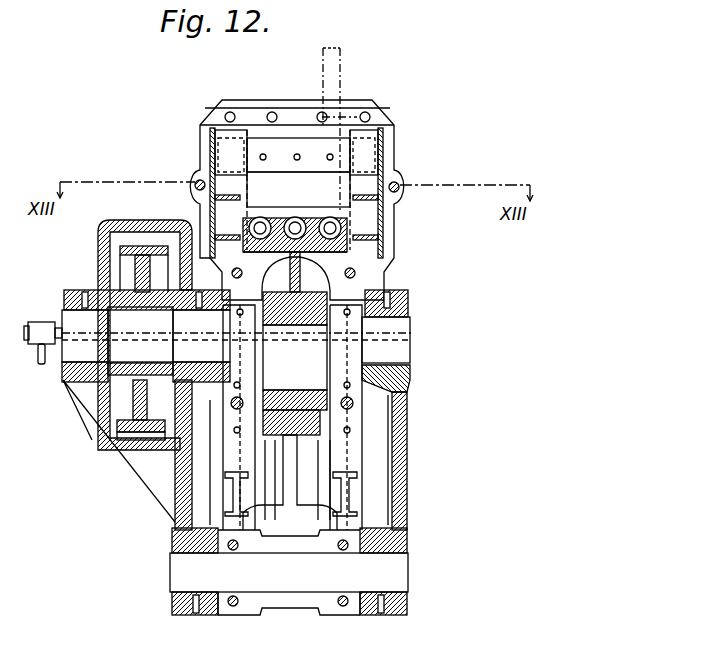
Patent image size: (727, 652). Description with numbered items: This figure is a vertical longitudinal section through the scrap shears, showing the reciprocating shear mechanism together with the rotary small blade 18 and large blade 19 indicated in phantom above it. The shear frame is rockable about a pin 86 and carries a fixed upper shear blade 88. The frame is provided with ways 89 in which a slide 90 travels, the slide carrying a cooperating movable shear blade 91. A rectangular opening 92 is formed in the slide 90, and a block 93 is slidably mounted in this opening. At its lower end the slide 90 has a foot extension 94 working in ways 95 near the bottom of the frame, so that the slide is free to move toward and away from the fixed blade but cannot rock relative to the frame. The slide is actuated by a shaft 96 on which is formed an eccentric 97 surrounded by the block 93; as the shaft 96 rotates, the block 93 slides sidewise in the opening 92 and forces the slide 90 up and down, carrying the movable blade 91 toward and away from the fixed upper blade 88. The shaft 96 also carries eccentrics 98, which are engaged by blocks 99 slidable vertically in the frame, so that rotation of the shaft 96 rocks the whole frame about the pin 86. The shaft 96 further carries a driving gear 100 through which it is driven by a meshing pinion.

The small blade 18 is at (342, 66).
The large blade 19 is at (360, 110).
The pin 86 is at (183, 575).
The fixed upper shear blade 88 is at (298, 155).
The ways 89 is at (222, 155).
The slide 90 is at (240, 225).
The movable shear blade 91 is at (345, 208).
The rectangular opening 92 is at (280, 410).
The block 93 is at (300, 405).
The foot extension 94 is at (290, 483).
The ways 95 is at (335, 497).
The shaft 96 is at (72, 357).
The eccentric 97 is at (295, 363).
The eccentrics 98 is at (173, 452).
The blocks 99 is at (232, 310).
The driving gear 100 is at (140, 430).